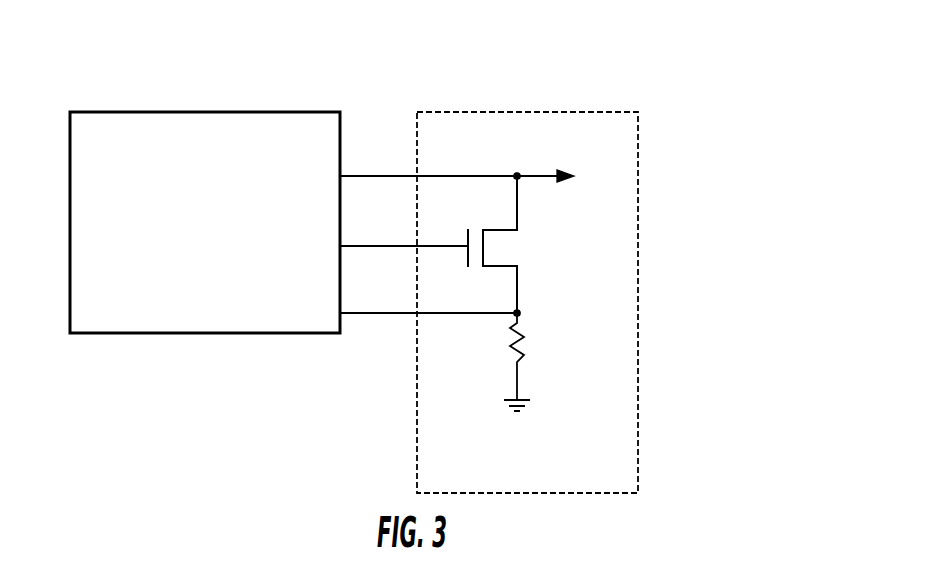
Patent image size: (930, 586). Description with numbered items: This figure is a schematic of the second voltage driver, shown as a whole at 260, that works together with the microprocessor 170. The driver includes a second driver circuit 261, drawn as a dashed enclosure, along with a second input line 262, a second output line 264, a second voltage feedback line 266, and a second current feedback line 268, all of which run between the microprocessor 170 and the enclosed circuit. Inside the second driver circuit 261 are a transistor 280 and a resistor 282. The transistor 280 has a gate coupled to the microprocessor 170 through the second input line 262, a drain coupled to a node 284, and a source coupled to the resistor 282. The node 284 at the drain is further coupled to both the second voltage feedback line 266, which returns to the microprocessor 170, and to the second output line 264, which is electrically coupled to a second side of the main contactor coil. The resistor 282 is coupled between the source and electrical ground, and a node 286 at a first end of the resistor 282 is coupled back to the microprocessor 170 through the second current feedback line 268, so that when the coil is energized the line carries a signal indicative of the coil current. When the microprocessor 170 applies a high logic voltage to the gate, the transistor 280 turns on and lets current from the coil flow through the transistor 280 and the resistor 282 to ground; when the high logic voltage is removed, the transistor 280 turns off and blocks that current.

The microprocessor 170 is at (237, 112).
The switching circuit 260 is at (737, 91).
The second driver circuit 261 is at (610, 112).
The second input line 262 is at (352, 245).
The second output line 264 is at (545, 179).
The second voltage feedback line 266 is at (378, 174).
The second current feedback line 268 is at (352, 312).
The transistor 280 is at (508, 231).
The resistor 282 is at (524, 340).
The node 284 is at (518, 172).
The node 286 is at (515, 317).